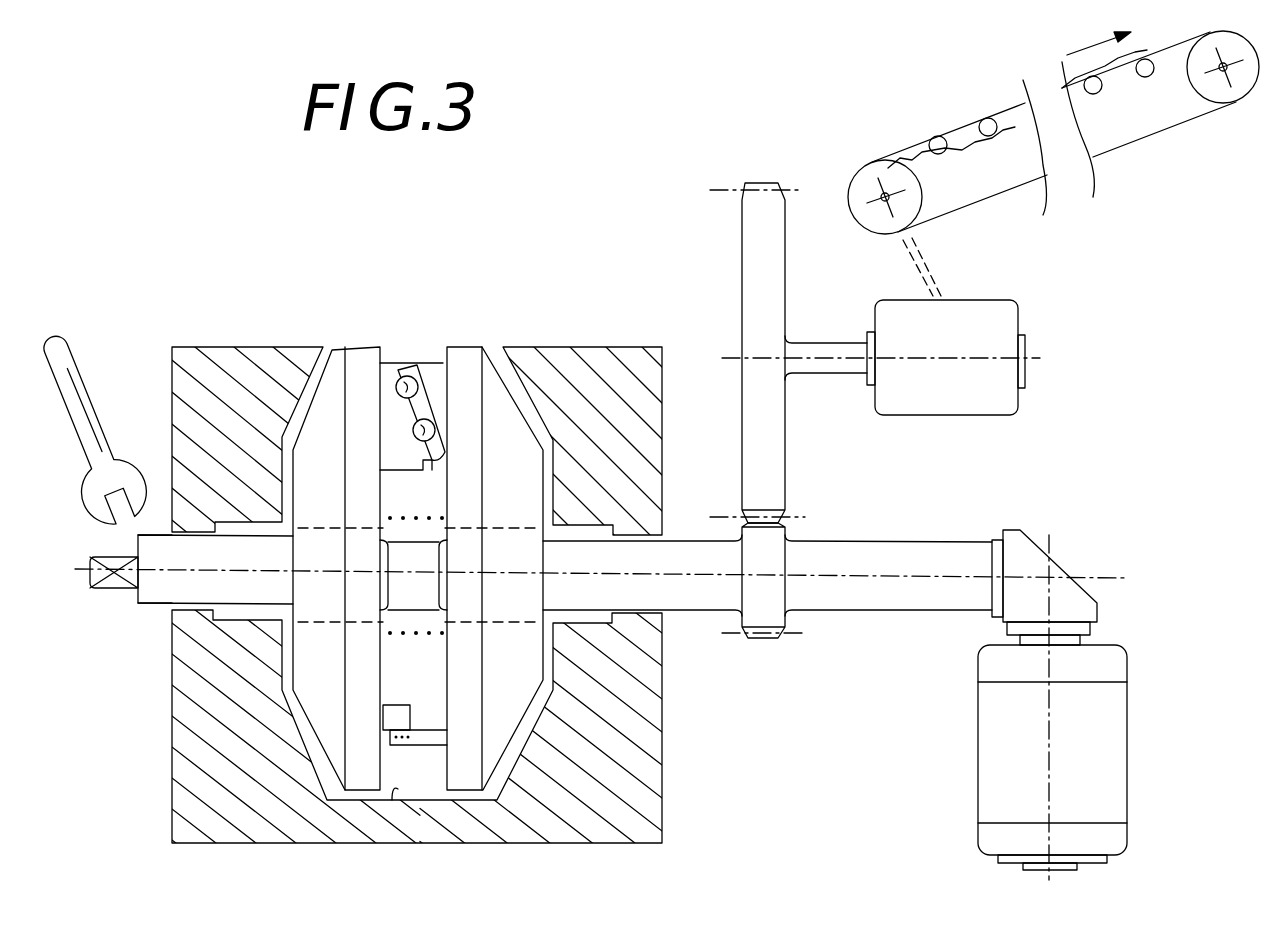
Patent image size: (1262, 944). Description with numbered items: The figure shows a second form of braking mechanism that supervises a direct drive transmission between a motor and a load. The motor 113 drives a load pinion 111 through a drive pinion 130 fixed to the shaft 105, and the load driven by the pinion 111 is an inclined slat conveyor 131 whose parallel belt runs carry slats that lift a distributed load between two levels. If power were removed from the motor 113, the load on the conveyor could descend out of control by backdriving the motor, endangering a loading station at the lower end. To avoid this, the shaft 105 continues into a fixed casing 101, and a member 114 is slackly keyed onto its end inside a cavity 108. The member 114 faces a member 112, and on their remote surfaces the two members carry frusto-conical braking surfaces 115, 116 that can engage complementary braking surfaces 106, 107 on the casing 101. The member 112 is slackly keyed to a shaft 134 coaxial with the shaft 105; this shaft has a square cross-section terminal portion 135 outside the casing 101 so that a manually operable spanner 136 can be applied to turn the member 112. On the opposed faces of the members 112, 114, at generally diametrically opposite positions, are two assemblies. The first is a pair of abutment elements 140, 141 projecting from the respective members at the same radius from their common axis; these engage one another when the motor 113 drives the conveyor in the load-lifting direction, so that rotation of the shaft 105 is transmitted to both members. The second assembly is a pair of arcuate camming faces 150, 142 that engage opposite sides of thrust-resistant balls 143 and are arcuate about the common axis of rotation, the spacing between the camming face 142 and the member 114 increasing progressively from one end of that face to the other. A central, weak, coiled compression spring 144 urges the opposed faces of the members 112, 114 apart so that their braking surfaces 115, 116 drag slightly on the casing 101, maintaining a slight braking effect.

The casing 101 is at (648, 776).
The shaft 105 is at (700, 602).
The complementary braking surface 106 is at (297, 421).
The complementary braking surface 107 is at (607, 452).
The cavity 108 is at (392, 800).
The load pinion 111 is at (777, 262).
The member 112 is at (356, 524).
The motor 113 is at (1000, 768).
The member 114 is at (520, 446).
The frusto-conical braking surface 115 is at (327, 357).
The frusto-conical braking surface 116 is at (503, 388).
The drive pinion 130 is at (778, 615).
The inclined slat conveyor 131 is at (948, 86).
The shaft 134 is at (158, 603).
The square cross-section terminal portion 135 is at (115, 587).
The manually operable spanner 136 is at (72, 356).
The abutment element 140 is at (383, 718).
The abutment element 141 is at (433, 747).
The arcuate camming face 142 is at (437, 398).
The thrust-resistant balls 143 is at (412, 376).
The coiled compression spring 144 is at (417, 640).
The arcuate camming face 150 is at (400, 378).